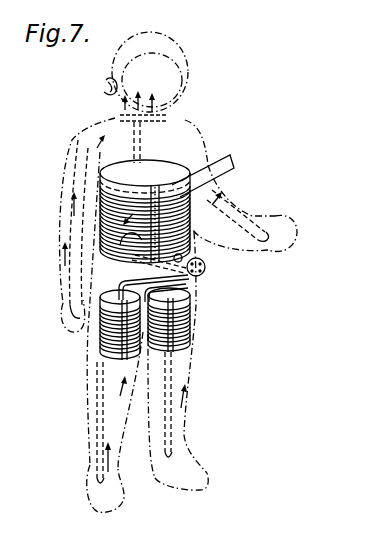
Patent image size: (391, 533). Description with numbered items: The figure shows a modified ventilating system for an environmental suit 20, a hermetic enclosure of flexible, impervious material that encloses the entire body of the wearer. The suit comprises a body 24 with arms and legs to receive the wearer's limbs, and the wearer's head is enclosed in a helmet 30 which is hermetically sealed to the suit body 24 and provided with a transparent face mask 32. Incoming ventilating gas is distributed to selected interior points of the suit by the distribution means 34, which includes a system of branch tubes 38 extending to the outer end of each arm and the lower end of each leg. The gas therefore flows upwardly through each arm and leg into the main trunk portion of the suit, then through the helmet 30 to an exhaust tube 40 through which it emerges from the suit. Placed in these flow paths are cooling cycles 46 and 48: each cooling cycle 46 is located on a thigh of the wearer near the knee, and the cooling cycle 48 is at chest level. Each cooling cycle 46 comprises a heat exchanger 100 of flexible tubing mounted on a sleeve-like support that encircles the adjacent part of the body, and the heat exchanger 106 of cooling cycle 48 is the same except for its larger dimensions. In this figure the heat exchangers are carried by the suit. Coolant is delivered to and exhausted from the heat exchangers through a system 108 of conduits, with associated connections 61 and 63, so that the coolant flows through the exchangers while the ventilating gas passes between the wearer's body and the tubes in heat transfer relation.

The environmental suit 20 is at (207, 126).
The suit body 24 is at (72, 152).
The helmet 30 is at (170, 39).
The transparent face mask 32 is at (182, 76).
The distribution means 34 is at (228, 158).
The branch tubes 38 is at (141, 139).
The exhaust tube 40 is at (102, 84).
The cooling cycle 46 is at (110, 364).
The cooling cycle 48 is at (95, 227).
The connecting pipes 61 is at (178, 289).
The fitting 63 is at (184, 257).
The heat exchanger 100 is at (98, 340).
The heat exchanger 106 is at (222, 183).
The system of conduits 108 is at (210, 270).